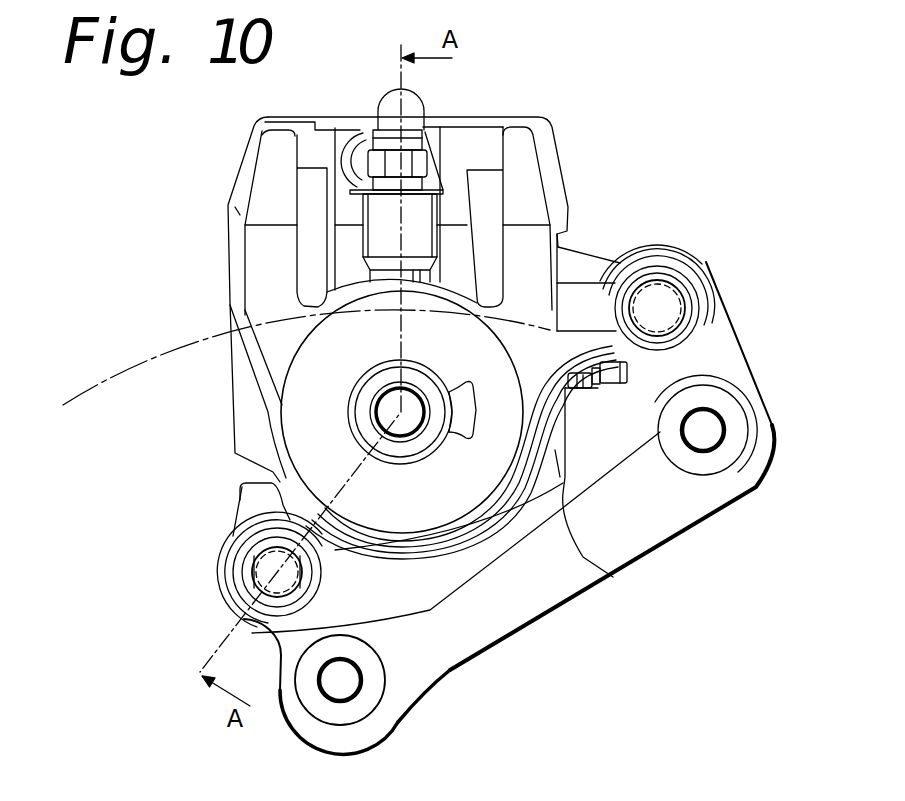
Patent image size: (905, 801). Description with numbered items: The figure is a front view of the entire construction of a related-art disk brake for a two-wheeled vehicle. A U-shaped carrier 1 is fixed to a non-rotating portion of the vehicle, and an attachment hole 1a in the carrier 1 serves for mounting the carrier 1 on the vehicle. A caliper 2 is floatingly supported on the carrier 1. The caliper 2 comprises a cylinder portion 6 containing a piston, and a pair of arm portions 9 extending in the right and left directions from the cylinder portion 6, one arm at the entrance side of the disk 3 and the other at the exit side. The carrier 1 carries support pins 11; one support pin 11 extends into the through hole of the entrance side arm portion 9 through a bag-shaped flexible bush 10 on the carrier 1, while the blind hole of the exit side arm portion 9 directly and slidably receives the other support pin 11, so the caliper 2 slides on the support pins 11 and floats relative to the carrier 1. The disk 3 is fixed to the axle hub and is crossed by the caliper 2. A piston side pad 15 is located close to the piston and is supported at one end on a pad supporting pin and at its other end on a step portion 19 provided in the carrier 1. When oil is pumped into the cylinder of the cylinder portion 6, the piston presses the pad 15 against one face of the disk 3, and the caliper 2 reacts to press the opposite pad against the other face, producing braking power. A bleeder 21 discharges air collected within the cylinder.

The carrier 1 is at (547, 612).
The attachment hole 1a is at (350, 680).
The caliper 2 is at (555, 138).
The disk 3 is at (117, 375).
The cylinder portion 6 is at (303, 413).
The arm portions 9 is at (587, 297).
The bush 10 is at (263, 572).
The support pins 11 is at (671, 299).
The pad 15 is at (613, 577).
The step portion 19 is at (598, 388).
The bleeder 21 is at (388, 108).